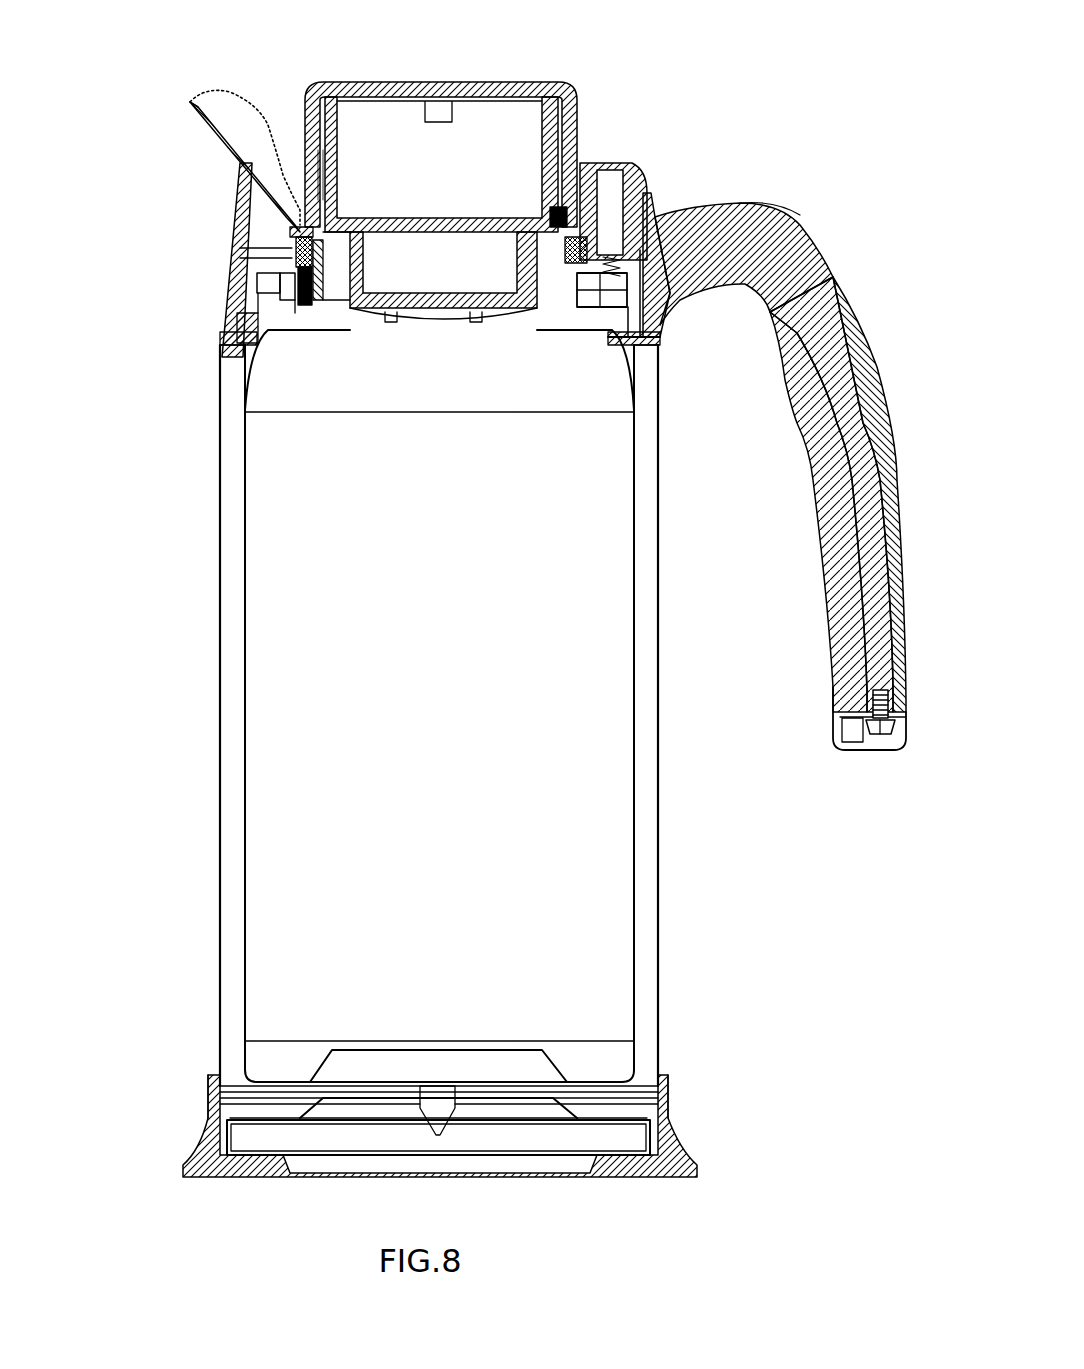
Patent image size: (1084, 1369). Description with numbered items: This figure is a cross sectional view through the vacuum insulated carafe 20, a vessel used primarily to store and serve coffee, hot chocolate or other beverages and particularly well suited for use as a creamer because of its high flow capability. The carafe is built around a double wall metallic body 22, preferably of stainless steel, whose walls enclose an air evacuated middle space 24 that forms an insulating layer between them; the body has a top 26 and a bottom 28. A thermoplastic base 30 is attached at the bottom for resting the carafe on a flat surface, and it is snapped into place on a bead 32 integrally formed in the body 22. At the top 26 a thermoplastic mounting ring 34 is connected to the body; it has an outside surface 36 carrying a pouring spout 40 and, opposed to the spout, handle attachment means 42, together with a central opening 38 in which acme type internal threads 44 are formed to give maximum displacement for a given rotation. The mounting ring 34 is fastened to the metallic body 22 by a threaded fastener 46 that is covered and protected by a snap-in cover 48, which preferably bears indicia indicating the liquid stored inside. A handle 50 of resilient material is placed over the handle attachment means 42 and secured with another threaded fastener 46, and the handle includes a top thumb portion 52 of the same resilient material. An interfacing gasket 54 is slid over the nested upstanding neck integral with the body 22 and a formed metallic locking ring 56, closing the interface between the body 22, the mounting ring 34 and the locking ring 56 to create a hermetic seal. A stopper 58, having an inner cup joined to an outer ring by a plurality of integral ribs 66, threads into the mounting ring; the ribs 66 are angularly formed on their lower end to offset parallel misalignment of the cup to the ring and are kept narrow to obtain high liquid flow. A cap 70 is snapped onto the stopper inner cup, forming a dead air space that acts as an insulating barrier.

The vacuum insulated carafe 20 is at (202, 727).
The double wall metallic body 22 is at (660, 890).
The air evacuated middle space 24 is at (655, 722).
The top 26 is at (270, 285).
The bottom 28 is at (277, 1120).
The base 30 is at (697, 1170).
The bead 32 is at (662, 1088).
The mounting ring 34 is at (649, 193).
The outside surface 36 is at (232, 187).
The central opening 38 is at (320, 300).
The pouring spout 40 is at (213, 92).
The handle attachment means 42 is at (885, 493).
The internal threads 44 is at (893, 693).
The threaded fastener 46 is at (880, 725).
The snap-in cover 48 is at (605, 163).
The handle 50 is at (870, 367).
The top thumb portion 52 is at (775, 205).
The interfacing gasket 54 is at (245, 252).
The locking ring 56 is at (316, 300).
The stopper 58 is at (545, 84).
The integral ribs 66 is at (520, 318).
The cap 70 is at (385, 82).